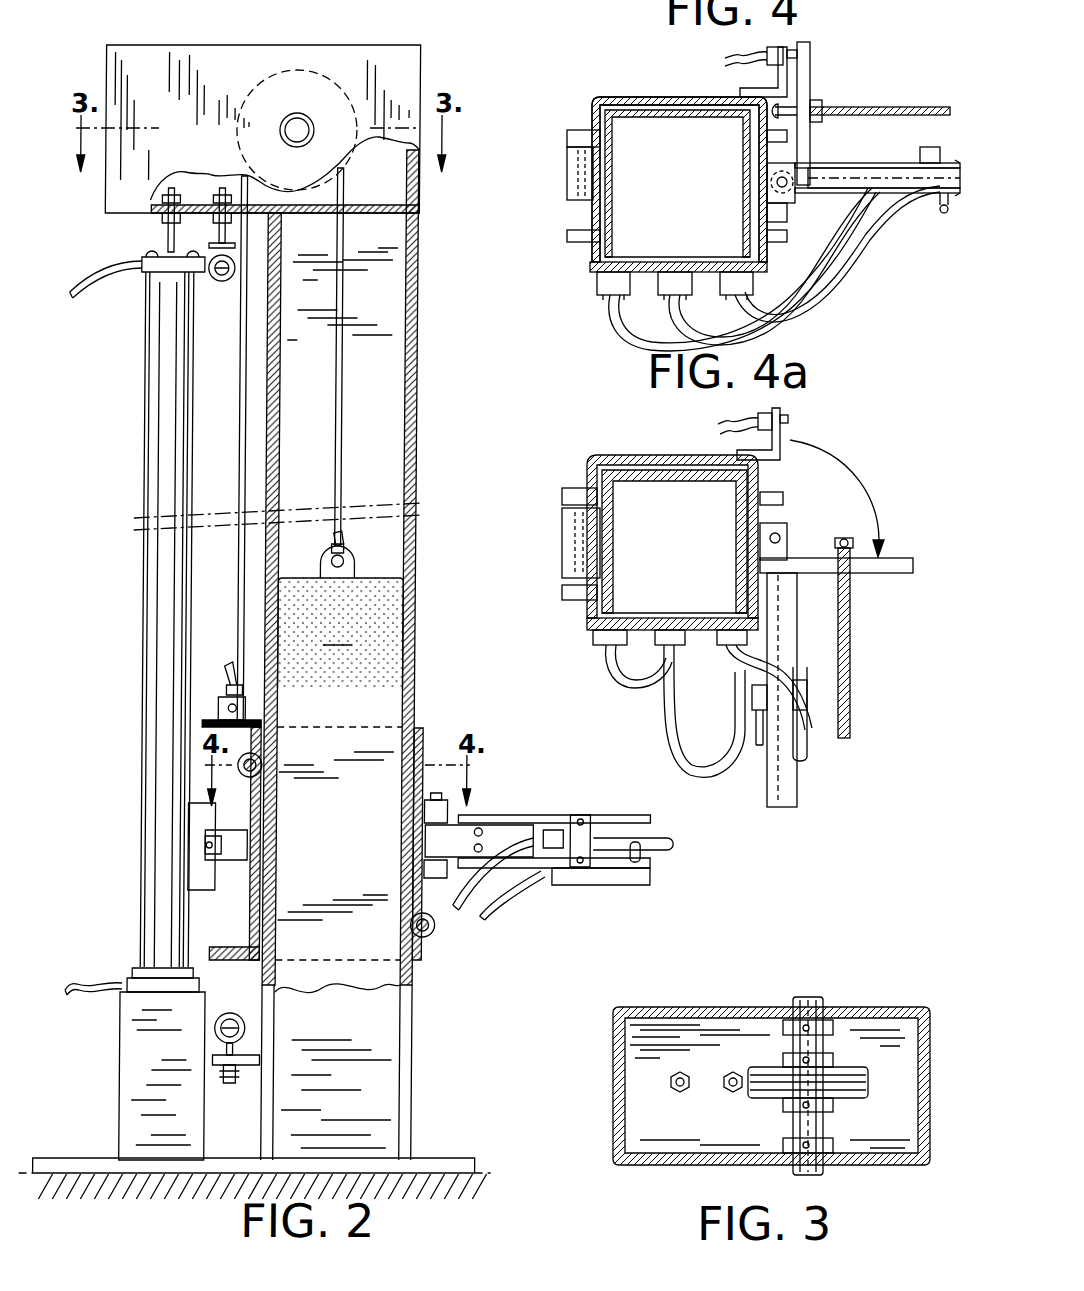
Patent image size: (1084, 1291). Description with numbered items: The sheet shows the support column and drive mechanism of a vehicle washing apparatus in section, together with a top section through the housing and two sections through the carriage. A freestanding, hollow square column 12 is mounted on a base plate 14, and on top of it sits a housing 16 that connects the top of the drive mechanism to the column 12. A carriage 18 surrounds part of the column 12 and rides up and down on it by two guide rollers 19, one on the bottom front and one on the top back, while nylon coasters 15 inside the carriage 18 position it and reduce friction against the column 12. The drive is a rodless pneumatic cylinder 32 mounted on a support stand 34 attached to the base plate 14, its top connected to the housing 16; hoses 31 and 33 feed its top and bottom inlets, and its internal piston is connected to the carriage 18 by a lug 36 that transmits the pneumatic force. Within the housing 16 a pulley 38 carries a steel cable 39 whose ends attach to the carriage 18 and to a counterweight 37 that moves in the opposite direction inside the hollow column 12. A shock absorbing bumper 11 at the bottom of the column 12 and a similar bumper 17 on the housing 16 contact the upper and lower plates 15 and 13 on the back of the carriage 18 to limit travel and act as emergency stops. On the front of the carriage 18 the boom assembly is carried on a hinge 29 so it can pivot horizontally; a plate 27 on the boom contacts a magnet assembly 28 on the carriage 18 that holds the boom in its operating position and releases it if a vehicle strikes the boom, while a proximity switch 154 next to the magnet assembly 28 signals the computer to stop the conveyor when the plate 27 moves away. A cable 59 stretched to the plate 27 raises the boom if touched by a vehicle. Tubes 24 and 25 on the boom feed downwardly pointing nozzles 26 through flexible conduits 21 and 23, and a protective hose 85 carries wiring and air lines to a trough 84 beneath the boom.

In FIG. 2, the shock absorbing bumper 11 is at (221, 1028).
In FIG. 2, the square column 12 is at (420, 534).
In FIG. 4, the square column 12 is at (600, 162).
In FIG. 4a, the square column 12 is at (605, 556).
In FIG. 2, the lower plate 13 is at (242, 962).
In FIG. 2, the base plate 14 is at (442, 1167).
In FIG. 2, the nylon coasters / upper plate 15 is at (222, 702).
In FIG. 4, the nylon coasters / upper plate 15 is at (712, 122).
In FIG. 4a, the nylon coasters / upper plate 15 is at (712, 485).
In FIG. 2, the housing 16 is at (421, 58).
In FIG. 3, the housing 16 is at (712, 1007).
In FIG. 2, the bumper 17 is at (222, 281).
In FIG. 2, the carriage 18 is at (429, 735).
In FIG. 4, the carriage 18 is at (590, 266).
In FIG. 4a, the carriage 18 is at (587, 618).
In FIG. 2, the guide rollers 19 is at (252, 771).
In FIG. 4, the guide rollers 19 is at (567, 195).
In FIG. 4a, the guide rollers 19 is at (565, 520).
In FIG. 2, the flexible conduit 21 is at (522, 838).
In FIG. 4, the flexible conduit 21 is at (672, 300).
In FIG. 4a, the flexible conduit 21 is at (668, 715).
In FIG. 2, the flexible conduit 23 is at (515, 885).
In FIG. 4, the flexible conduit 23 is at (612, 300).
In FIG. 4a, the flexible conduit 23 is at (625, 668).
In FIG. 2, the tube 24 is at (620, 838).
In FIG. 4, the tube 24 is at (946, 208).
In FIG. 4a, the tube 24 is at (757, 745).
In FIG. 4, the tube 25 is at (948, 160).
In FIG. 4a, the tube 25 is at (810, 742).
In FIG. 2, the nozzles 26 is at (642, 862).
In FIG. 4, the plate 27 is at (810, 77).
In FIG. 4a, the plate 27 is at (905, 558).
In FIG. 4, the magnet assembly 28 is at (775, 77).
In FIG. 4a, the magnet assembly 28 is at (790, 432).
In FIG. 2, the hinge 29 is at (440, 795).
In FIG. 4, the hinge 29 is at (795, 192).
In FIG. 4a, the hinge 29 is at (787, 538).
In FIG. 2, the hose 31 is at (103, 280).
In FIG. 2, the rodless pneumatic cylinder 32 is at (145, 672).
In FIG. 2, the hose 33 is at (96, 978).
In FIG. 2, the support stand 34 is at (148, 1088).
In FIG. 2, the lug 36 is at (232, 870).
In FIG. 2, the counterweight 37 is at (340, 609).
In FIG. 2, the pulley 38 is at (292, 70).
In FIG. 3, the pulley 38 is at (850, 1065).
In FIG. 2, the steel cable 39 is at (345, 326).
In FIG. 3, the steel cable 39 is at (866, 1084).
In FIG. 4, the cable 59 is at (903, 108).
In FIG. 4a, the cable 59 is at (852, 625).
In FIG. 2, the bracket / plastic trough 84 is at (622, 885).
In FIG. 2, the hose 85 is at (540, 870).
In FIG. 4, the hose 85 is at (812, 268).
In FIG. 4a, the hose 85 is at (735, 660).
In FIG. 4, the proximity switch 154 is at (762, 47).
In FIG. 4a, the proximity switch 154 is at (755, 438).